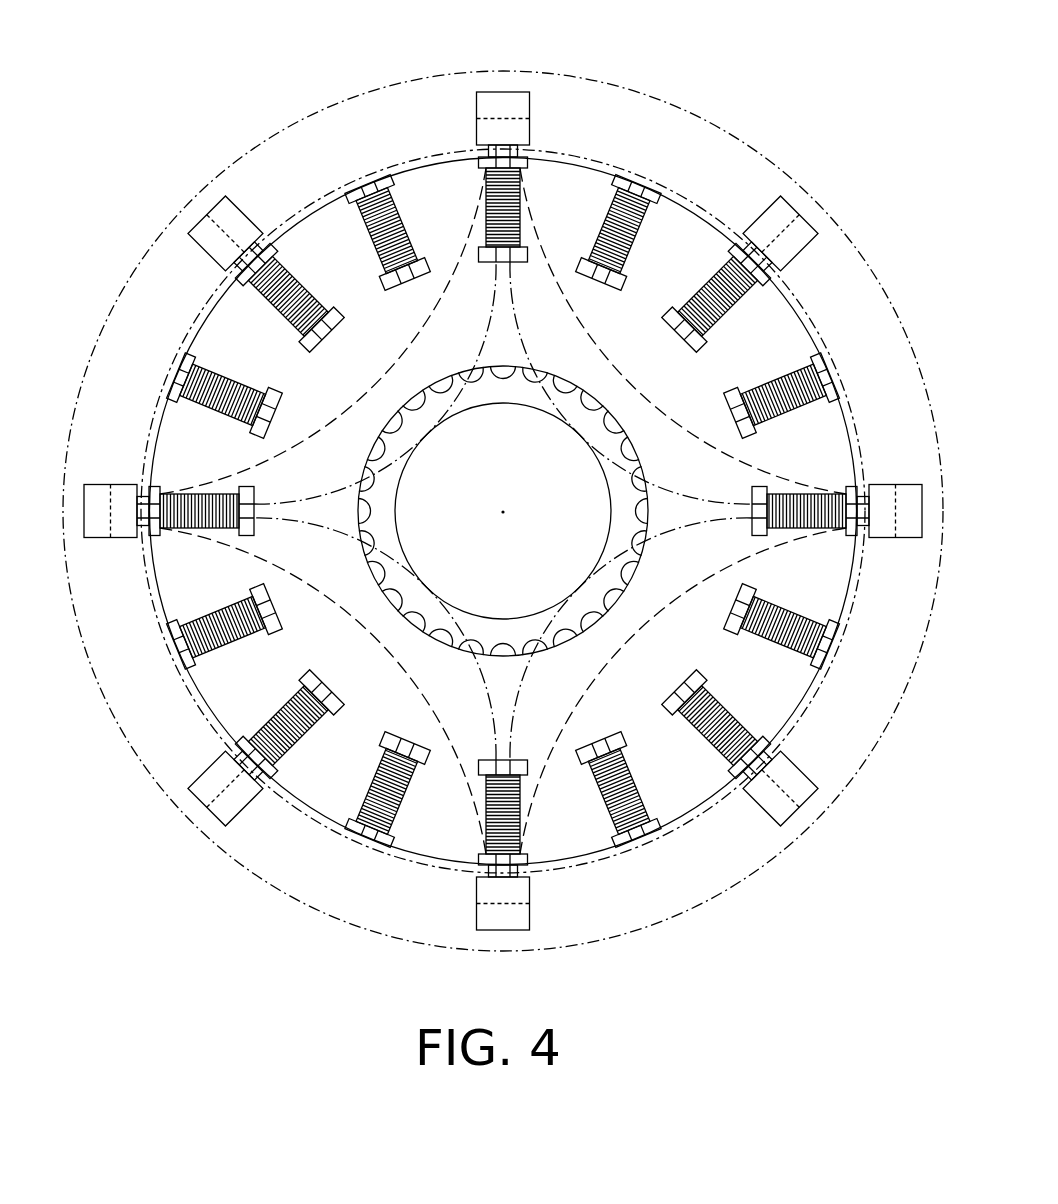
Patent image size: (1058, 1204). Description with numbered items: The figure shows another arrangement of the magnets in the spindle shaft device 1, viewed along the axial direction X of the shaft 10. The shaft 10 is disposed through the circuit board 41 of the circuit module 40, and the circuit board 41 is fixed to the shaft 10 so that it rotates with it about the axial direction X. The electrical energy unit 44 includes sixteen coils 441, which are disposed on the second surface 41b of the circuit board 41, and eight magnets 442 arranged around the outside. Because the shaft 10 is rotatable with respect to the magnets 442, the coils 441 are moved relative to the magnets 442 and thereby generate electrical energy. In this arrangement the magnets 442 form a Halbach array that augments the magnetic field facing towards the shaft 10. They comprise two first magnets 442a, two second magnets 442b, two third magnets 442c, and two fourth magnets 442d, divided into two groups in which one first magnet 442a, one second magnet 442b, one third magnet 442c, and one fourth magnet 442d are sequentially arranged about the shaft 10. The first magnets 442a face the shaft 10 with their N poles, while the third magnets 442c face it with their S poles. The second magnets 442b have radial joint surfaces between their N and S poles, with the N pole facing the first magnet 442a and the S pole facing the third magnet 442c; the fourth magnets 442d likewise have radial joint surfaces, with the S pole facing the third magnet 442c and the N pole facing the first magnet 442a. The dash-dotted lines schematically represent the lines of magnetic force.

The spindle shaft device 1 is at (890, 29).
The shaft 10 is at (377, 443).
The circuit module 40 is at (713, 917).
The circuit board 41 is at (822, 450).
The second surface 41b is at (673, 249).
The electrical energy unit 44 is at (908, 180).
The coil 441 is at (798, 365).
The magnet 442 is at (787, 203).
The first magnet 442a is at (472, 91).
The second magnet 442b is at (780, 196).
The third magnet 442c is at (82, 483).
The fourth magnet 442d is at (223, 196).